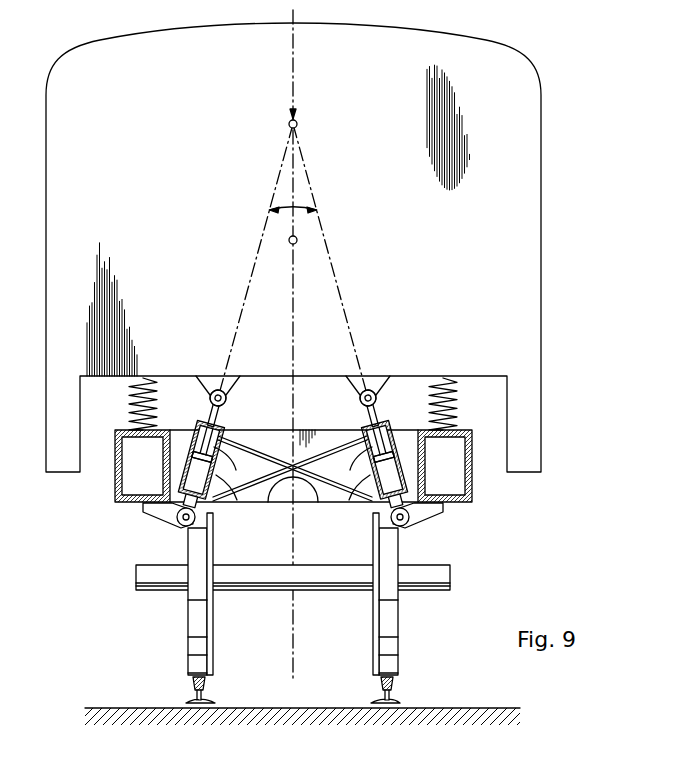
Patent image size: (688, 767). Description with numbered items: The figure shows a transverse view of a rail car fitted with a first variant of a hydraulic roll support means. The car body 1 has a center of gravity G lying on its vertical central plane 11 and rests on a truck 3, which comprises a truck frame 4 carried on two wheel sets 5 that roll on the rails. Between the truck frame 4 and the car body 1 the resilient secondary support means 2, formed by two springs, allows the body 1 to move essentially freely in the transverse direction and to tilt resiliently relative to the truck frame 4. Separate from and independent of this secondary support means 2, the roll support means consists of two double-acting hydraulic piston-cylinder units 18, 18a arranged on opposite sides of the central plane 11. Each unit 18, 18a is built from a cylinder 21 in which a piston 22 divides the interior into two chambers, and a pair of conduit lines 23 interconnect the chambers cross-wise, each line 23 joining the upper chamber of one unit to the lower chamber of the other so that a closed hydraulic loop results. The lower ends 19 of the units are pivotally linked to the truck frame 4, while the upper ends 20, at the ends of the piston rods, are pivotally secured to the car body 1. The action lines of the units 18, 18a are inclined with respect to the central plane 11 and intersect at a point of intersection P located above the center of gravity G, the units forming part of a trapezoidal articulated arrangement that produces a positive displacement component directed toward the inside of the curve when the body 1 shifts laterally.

The car body 1 is at (522, 186).
The secondary support means 2 is at (127, 398).
The truck 3 is at (92, 498).
The truck frame 4 is at (472, 492).
The wheel sets 5 is at (160, 624).
The vertical central plane 11 is at (296, 48).
The hydraulic piston-cylinder unit 18 is at (190, 407).
The hydraulic piston-cylinder unit 18a is at (396, 407).
The lower ends 19 is at (184, 530).
The upper ends 20 is at (228, 399).
The cylinder 21 is at (216, 446).
The piston 22 is at (214, 497).
The conduit lines 23 is at (280, 505).
The point of intersection P is at (300, 123).
The center of gravity G is at (297, 244).